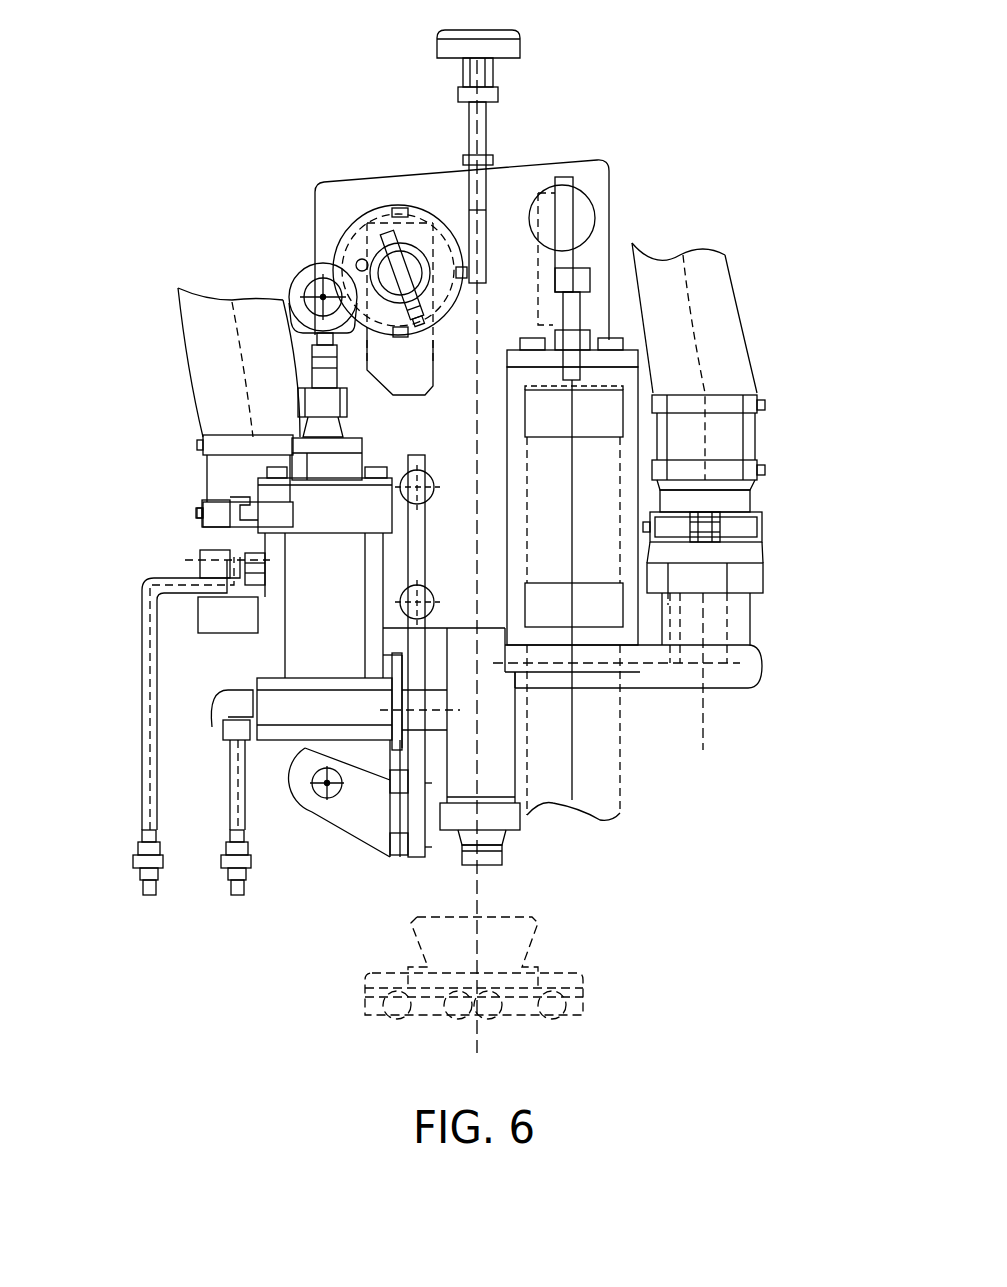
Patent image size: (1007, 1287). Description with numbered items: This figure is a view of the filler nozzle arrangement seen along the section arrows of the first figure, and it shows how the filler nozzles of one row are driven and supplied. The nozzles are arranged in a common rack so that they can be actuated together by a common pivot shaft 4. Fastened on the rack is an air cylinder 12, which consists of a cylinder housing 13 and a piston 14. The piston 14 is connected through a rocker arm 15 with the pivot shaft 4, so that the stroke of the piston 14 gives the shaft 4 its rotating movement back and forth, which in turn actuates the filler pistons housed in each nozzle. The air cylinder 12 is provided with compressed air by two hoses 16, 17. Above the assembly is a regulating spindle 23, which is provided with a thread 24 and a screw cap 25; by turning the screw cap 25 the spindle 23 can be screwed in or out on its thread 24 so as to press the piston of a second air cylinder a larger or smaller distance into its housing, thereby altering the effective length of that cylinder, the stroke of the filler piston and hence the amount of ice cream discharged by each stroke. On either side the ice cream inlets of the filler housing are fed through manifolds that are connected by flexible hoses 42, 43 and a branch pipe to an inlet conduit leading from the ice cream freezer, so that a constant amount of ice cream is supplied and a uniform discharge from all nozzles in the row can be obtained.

The pivot shaft 4 is at (380, 223).
The air cylinder 12 is at (285, 652).
The cylinder housing 13 is at (310, 462).
The piston 14 is at (300, 403).
The rocker arm 15 is at (358, 264).
The hose 16 is at (142, 735).
The hose 17 is at (227, 813).
The regulating spindle 23 is at (548, 95).
The thread 24 is at (473, 125).
The screw cap 25 is at (522, 153).
The hose 42 is at (207, 330).
The hose 43 is at (733, 323).